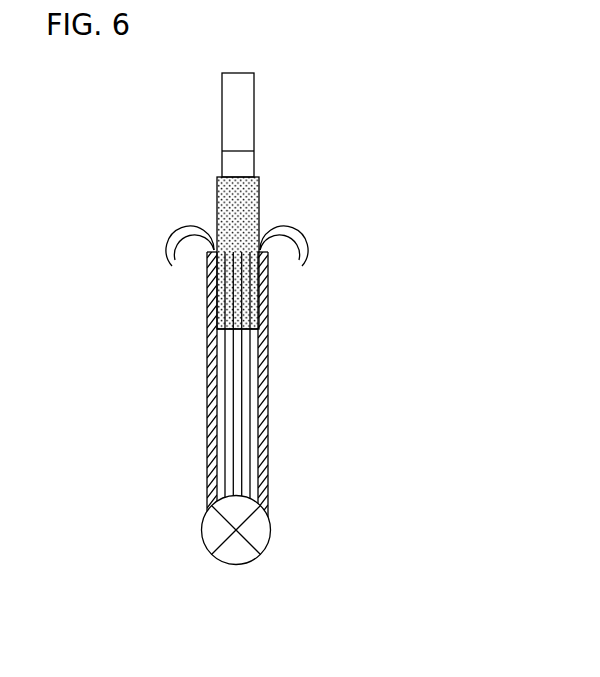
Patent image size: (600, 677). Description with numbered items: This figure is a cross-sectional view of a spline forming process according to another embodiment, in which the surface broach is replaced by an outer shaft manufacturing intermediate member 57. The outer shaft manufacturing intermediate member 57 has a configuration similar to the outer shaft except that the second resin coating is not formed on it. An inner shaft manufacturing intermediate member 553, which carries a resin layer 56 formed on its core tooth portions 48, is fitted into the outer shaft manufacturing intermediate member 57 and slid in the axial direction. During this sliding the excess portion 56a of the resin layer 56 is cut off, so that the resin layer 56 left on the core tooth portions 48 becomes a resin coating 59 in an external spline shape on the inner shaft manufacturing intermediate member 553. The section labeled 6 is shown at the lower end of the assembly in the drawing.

The inner shaft manufacturing intermediate member 553 is at (256, 122).
The resin layer 56 is at (228, 195).
The excess portion 56a is at (294, 228).
The outer shaft manufacturing intermediate member 57 is at (205, 383).
The resin coating 59 is at (252, 295).
The core tooth portion 48 is at (250, 383).
The wire (cross-section) 6 is at (270, 526).